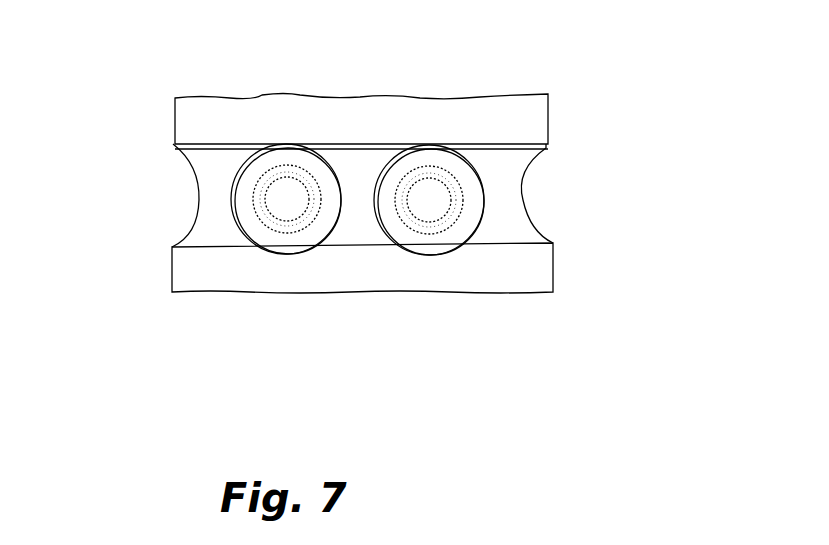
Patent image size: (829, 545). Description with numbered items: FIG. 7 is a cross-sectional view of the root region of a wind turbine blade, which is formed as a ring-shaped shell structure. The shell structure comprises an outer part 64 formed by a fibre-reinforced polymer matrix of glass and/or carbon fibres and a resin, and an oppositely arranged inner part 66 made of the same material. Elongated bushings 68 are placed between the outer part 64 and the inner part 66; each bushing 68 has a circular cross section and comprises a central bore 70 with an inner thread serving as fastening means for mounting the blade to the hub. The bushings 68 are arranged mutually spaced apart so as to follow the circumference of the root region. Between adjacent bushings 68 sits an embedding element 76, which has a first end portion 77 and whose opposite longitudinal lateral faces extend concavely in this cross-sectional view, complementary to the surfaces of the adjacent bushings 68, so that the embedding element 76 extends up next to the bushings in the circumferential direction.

The outer part 64 is at (477, 278).
The inner part 66 is at (523, 107).
The bushing 68 is at (285, 160).
The central bore 70 is at (285, 205).
The embedding element 76 is at (212, 227).
The first end portion 77 is at (218, 160).